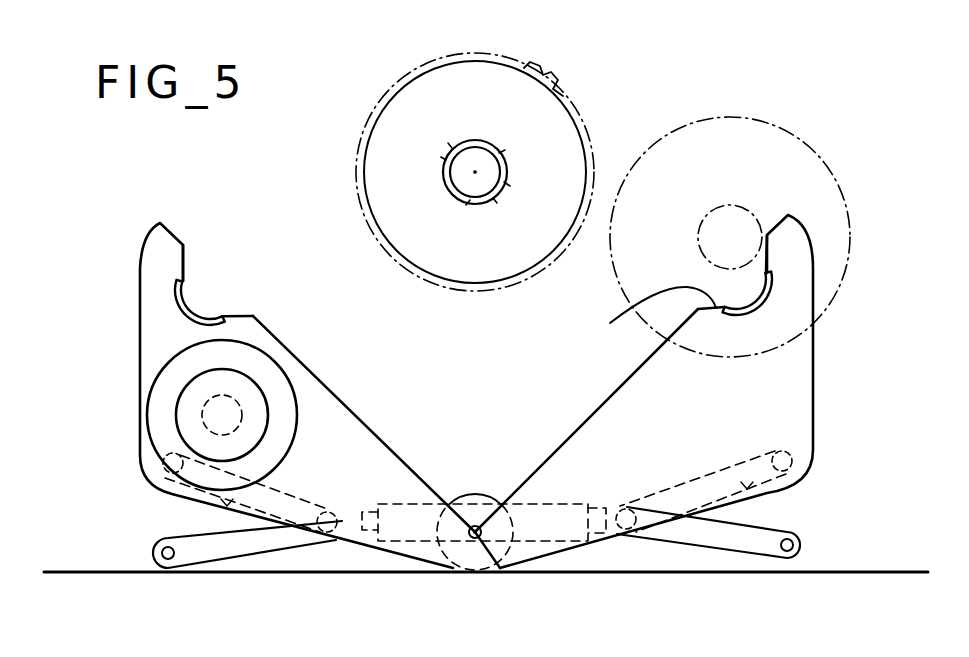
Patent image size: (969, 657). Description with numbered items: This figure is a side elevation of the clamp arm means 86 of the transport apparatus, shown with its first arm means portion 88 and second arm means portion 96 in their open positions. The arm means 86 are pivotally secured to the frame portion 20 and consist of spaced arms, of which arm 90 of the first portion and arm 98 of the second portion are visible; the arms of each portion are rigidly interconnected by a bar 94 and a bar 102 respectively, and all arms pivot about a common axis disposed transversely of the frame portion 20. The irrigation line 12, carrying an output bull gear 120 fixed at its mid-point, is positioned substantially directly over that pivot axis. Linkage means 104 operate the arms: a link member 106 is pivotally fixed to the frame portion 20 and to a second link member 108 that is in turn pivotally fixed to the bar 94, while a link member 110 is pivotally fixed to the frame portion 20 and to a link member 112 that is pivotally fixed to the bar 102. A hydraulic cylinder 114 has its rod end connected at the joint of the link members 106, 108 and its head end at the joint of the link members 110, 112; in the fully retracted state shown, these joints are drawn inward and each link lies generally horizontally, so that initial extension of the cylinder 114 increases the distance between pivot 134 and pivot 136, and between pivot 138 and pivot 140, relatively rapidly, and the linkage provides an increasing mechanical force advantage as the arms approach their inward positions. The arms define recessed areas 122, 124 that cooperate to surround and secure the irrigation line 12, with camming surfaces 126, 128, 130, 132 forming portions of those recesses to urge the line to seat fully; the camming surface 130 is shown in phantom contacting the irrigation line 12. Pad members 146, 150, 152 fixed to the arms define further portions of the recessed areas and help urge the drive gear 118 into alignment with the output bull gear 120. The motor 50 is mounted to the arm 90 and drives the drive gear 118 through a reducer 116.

The irrigation line 12 is at (503, 163).
The frame portion 20 is at (342, 655).
The motor 50 is at (178, 392).
The arm means 86 is at (521, 391).
The first arm means portion 88 is at (343, 406).
The arm 90 is at (352, 474).
The bar 94 is at (160, 480).
The second arm means portion 96 is at (598, 418).
The arm 98 is at (650, 460).
The bar 102 is at (800, 458).
The linkage means 104 is at (630, 549).
The link member 106 is at (229, 548).
The link member 108 is at (215, 508).
The link member 110 is at (723, 541).
The link member 112 is at (768, 496).
The hydraulic cylinder 114 is at (408, 502).
The reducer 116 is at (155, 415).
The drive gear 118 is at (235, 400).
The output bull gear 120 is at (545, 75).
The recessed area 122 is at (200, 297).
The recessed area 124 is at (715, 297).
The camming surface 126 is at (185, 262).
The camming surface 128 is at (243, 313).
The camming surface 130 is at (763, 257).
The camming surface 132 is at (615, 320).
The pivot 134 is at (153, 562).
The pivot 136 is at (152, 468).
The pivot 138 is at (801, 547).
The pivot 140 is at (803, 471).
The pad member 146 is at (177, 298).
The pad member 150 is at (773, 290).
The pad member 152 is at (545, 650).